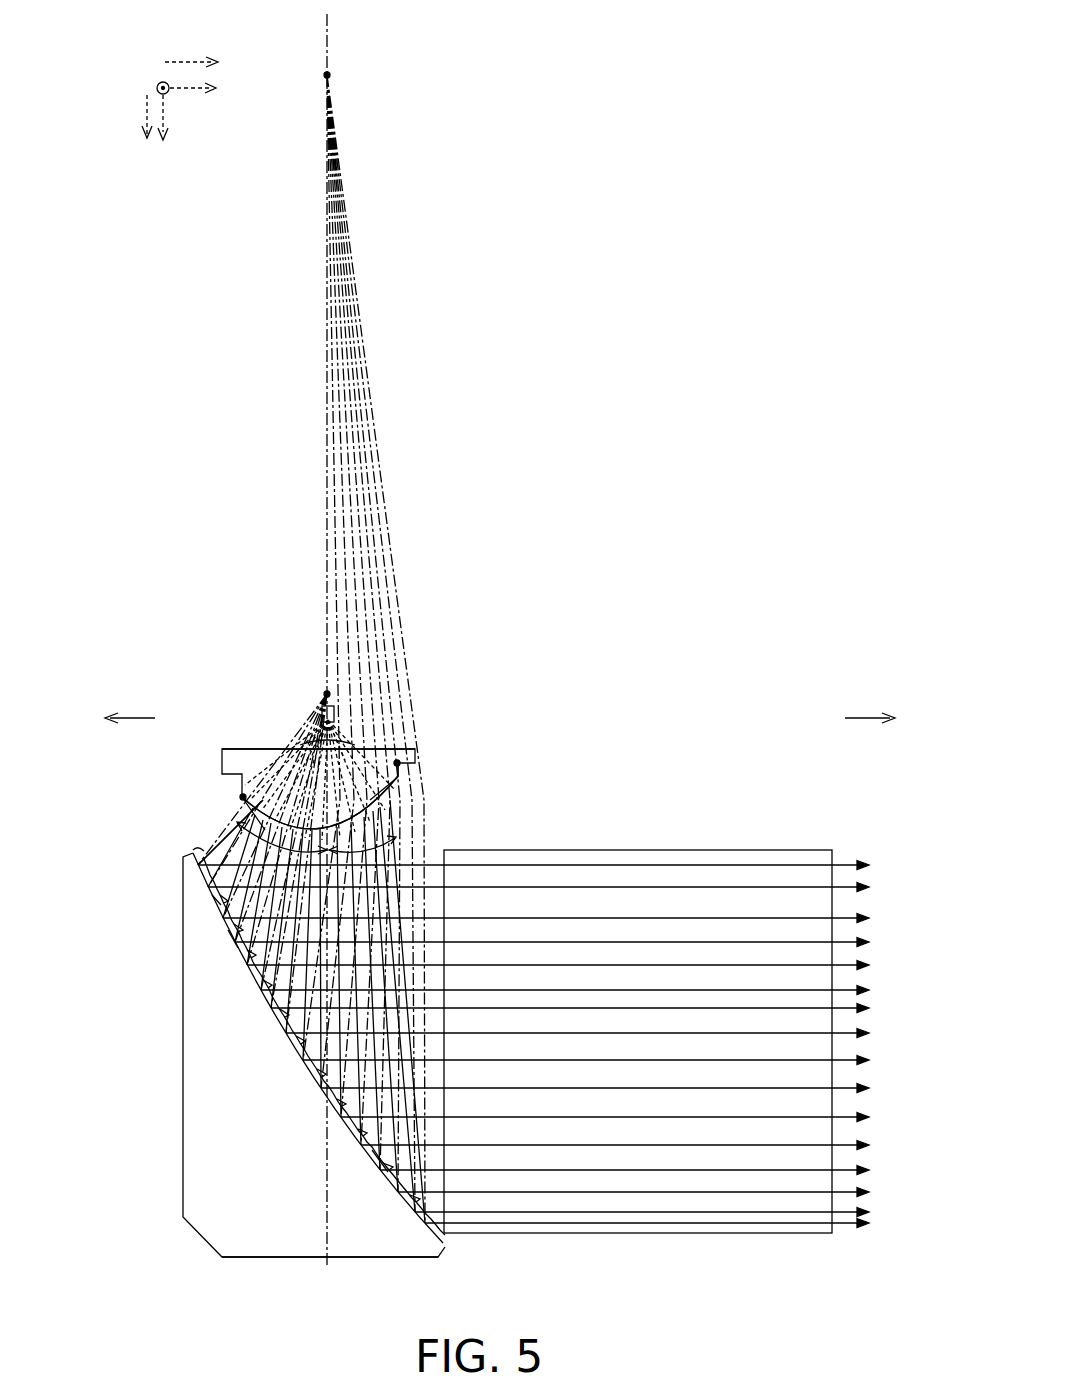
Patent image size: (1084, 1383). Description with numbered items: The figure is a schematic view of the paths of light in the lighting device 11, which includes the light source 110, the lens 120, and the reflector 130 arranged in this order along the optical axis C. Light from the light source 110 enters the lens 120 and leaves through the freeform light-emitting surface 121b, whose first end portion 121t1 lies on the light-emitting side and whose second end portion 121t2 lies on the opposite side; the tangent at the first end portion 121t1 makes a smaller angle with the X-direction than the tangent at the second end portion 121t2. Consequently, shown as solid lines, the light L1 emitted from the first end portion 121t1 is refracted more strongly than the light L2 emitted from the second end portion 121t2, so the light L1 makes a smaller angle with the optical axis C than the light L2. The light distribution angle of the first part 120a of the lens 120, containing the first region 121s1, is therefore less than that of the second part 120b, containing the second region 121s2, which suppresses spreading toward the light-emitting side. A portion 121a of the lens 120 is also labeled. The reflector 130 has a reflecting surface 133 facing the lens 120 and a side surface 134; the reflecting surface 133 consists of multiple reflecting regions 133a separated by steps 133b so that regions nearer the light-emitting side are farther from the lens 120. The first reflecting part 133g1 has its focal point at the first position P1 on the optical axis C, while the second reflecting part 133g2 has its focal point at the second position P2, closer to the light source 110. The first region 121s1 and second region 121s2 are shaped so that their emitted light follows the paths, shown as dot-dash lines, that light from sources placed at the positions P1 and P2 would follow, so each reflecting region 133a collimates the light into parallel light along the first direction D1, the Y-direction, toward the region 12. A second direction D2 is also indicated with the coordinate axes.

The lighting device 11 is at (208, 718).
The irradiated region 12 is at (792, 850).
The light source 110 is at (336, 712).
The lens 120 is at (222, 765).
The first part 120a is at (368, 748).
The second part 120b is at (252, 787).
The central incident surface 121a is at (303, 745).
The light-emitting surface 121b is at (385, 797).
The first end portion 121t1 is at (400, 762).
The second end portion 121t2 is at (240, 797).
The first region 121s1 is at (400, 776).
The second region 121s2 is at (250, 812).
The reflector 130 is at (205, 1195).
The reflecting surface 133 is at (442, 1232).
The reflecting region 133a is at (193, 853).
The step 133b is at (216, 900).
The first reflecting part 133g1 is at (380, 1185).
The second reflecting part 133g2 is at (242, 972).
The side surface 134 is at (246, 1258).
The light L1 is at (430, 900).
The light L2 is at (200, 850).
The first position P1 is at (324, 75).
The second position P2 is at (325, 692).
The optical axis C is at (326, 634).
The first direction D1 is at (193, 62).
The second direction D2 is at (143, 100).